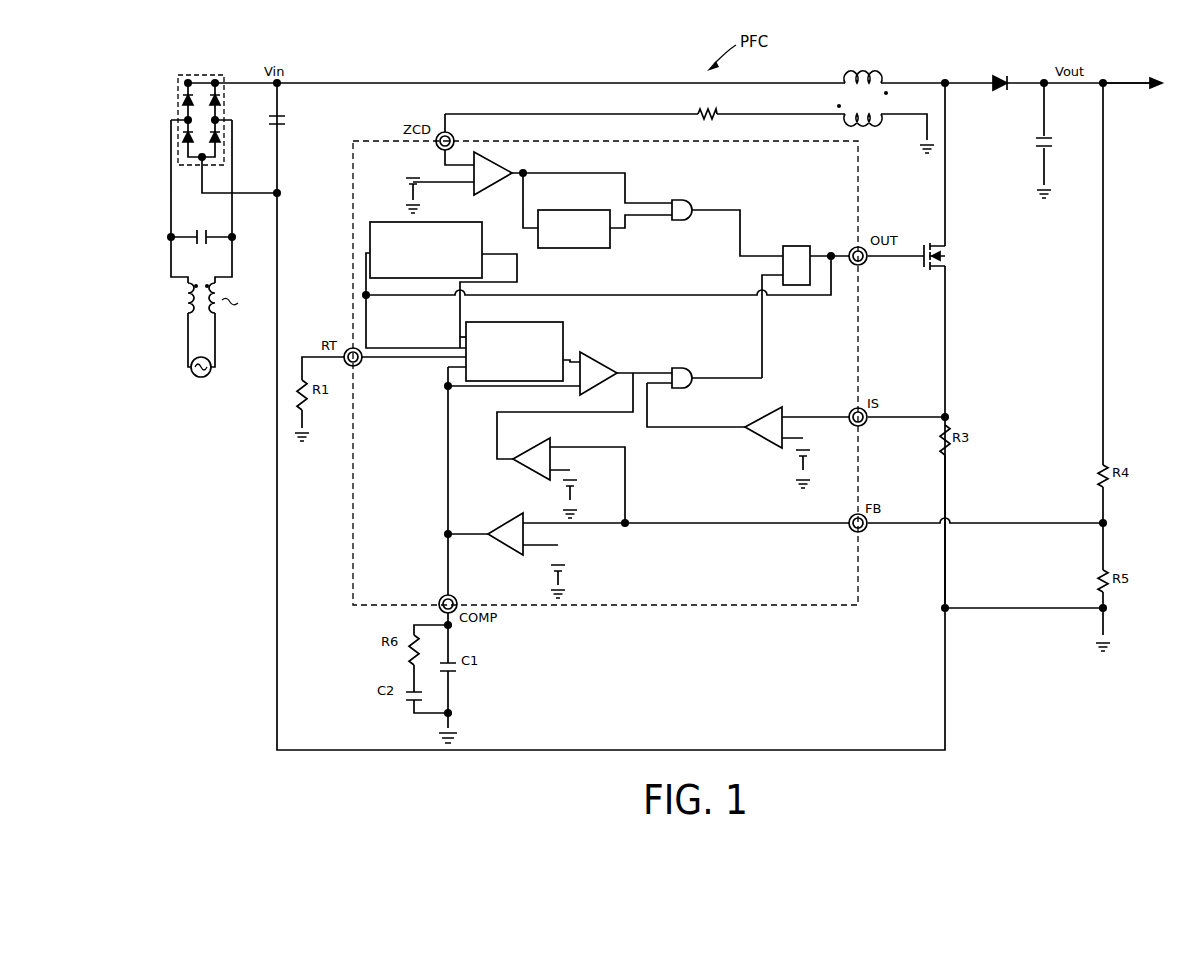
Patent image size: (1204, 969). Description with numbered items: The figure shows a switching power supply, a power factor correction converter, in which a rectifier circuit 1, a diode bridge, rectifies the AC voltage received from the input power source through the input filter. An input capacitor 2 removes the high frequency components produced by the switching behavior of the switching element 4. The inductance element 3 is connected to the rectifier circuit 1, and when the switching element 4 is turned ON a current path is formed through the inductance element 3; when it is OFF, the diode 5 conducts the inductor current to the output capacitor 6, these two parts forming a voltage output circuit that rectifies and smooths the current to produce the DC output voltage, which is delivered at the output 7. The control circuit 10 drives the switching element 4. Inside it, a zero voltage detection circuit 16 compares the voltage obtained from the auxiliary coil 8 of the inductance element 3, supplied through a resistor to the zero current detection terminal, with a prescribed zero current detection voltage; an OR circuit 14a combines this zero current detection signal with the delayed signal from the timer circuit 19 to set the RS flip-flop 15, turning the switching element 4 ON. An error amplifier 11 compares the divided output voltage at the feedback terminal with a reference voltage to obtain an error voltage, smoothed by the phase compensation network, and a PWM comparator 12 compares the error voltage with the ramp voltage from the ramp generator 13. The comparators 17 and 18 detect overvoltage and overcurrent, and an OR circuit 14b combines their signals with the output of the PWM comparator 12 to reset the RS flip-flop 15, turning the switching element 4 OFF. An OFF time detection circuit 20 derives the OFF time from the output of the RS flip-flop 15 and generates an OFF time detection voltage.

The rectifier circuit 1 is at (206, 75).
The input capacitor 2 is at (292, 118).
The inductance element 3 is at (862, 74).
The switching element 4 is at (950, 256).
The diode 5 is at (1003, 76).
The output capacitor 6 is at (1052, 134).
The output terminal 7 is at (1146, 80).
The auxiliary coil 8 is at (872, 128).
The control circuit 10 is at (862, 203).
The error amplifier 11 is at (492, 522).
The PWM comparator 12 is at (600, 362).
The ramp generator 13 is at (492, 322).
The OR circuit 14a is at (678, 200).
The OR circuit 14b is at (687, 367).
The RS flip-flop 15 is at (792, 246).
The zero voltage detection circuit 16 is at (507, 168).
The comparator 17 is at (523, 447).
The comparator 18 is at (757, 442).
The timer circuit 19 is at (578, 212).
The OFF time detection circuit 20 is at (450, 222).